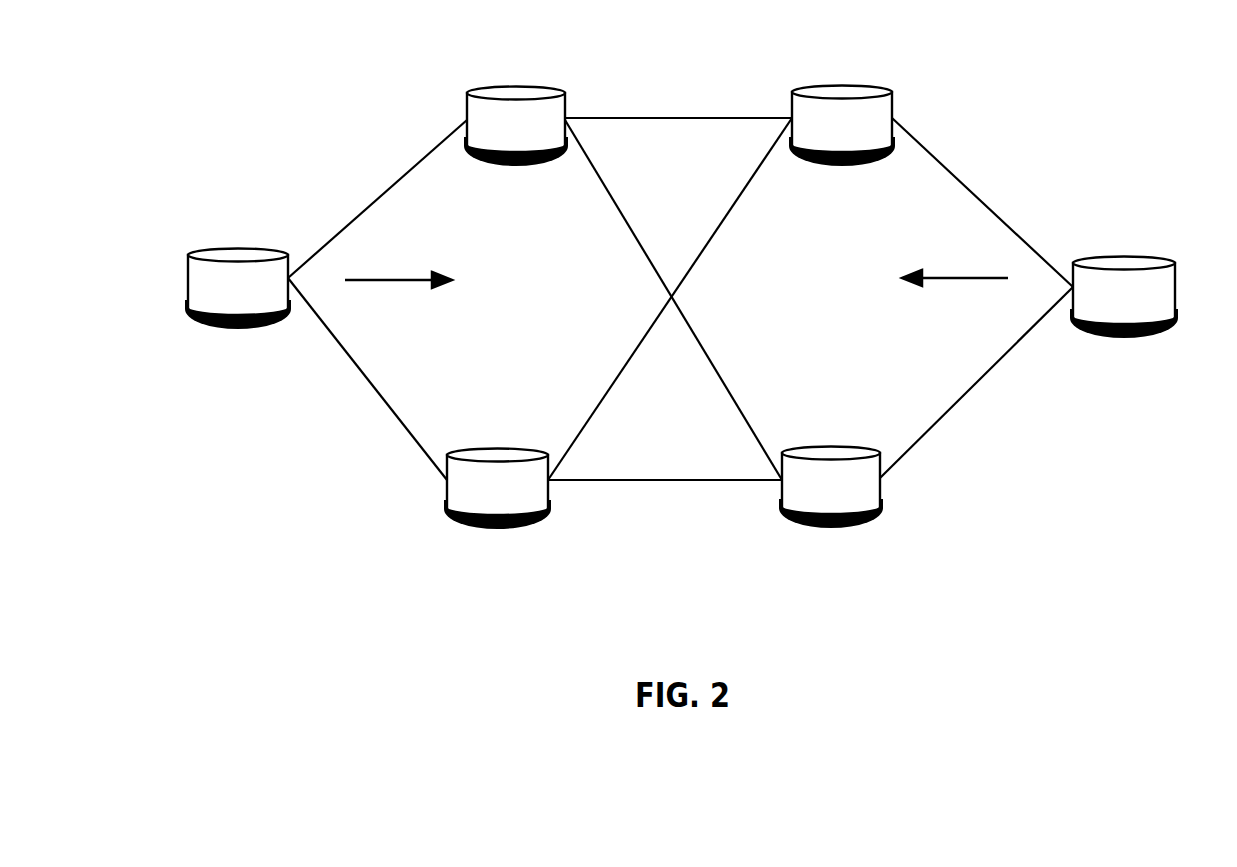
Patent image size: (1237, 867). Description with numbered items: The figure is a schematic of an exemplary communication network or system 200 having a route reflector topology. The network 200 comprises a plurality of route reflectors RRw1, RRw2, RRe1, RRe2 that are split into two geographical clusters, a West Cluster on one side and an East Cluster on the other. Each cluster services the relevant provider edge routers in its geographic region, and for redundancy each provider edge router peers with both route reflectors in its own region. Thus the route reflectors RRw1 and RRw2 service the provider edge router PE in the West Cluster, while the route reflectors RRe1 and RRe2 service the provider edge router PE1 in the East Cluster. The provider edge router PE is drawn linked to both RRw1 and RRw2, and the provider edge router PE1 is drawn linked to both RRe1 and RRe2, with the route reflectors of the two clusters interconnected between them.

The communication network or system 200 is at (695, 306).
The provider edge router PE is at (238, 308).
The provider edge router PE1 is at (1124, 311).
The route reflector RRw1 is at (516, 100).
The route reflector RRw2 is at (497, 514).
The route reflector RRe1 is at (842, 100).
The route reflector RRe2 is at (831, 512).